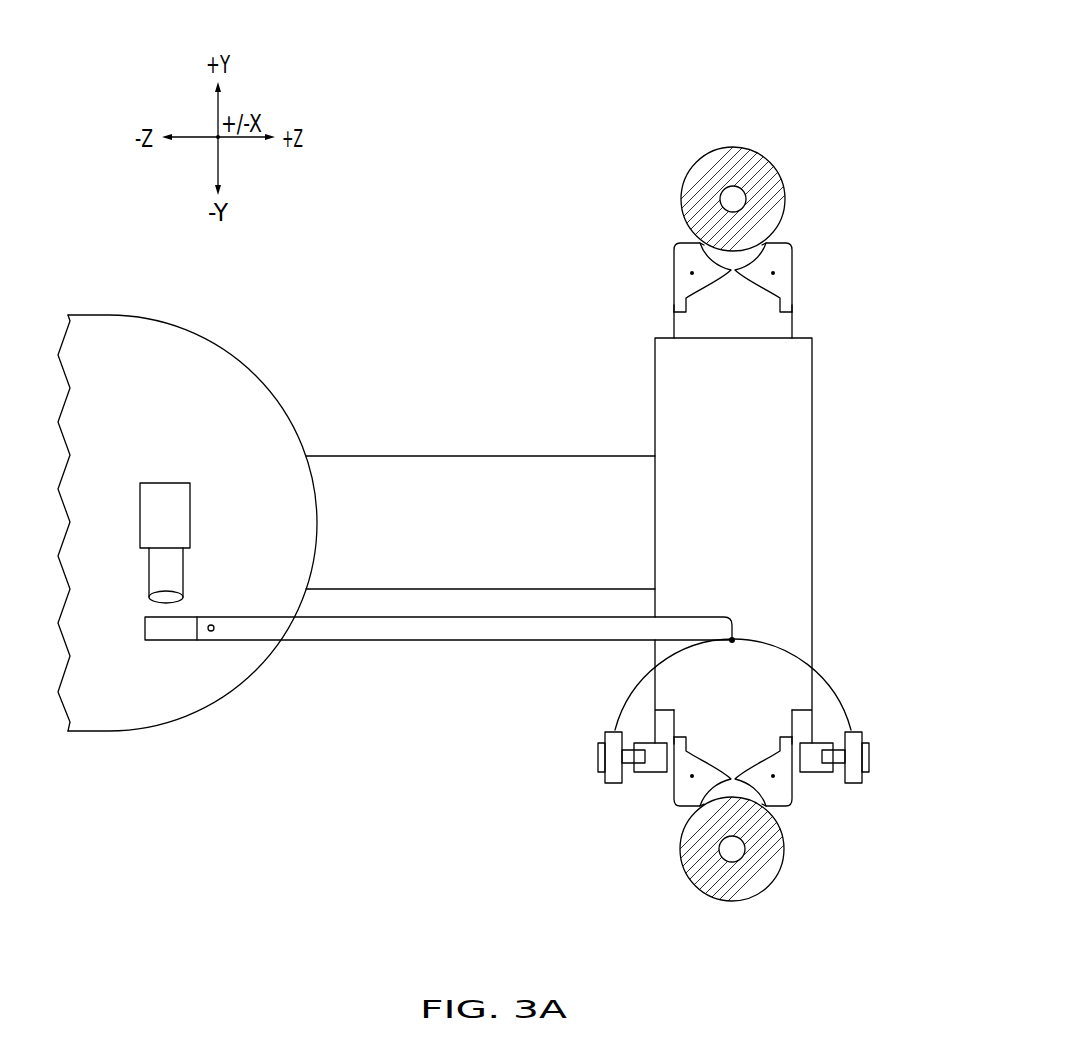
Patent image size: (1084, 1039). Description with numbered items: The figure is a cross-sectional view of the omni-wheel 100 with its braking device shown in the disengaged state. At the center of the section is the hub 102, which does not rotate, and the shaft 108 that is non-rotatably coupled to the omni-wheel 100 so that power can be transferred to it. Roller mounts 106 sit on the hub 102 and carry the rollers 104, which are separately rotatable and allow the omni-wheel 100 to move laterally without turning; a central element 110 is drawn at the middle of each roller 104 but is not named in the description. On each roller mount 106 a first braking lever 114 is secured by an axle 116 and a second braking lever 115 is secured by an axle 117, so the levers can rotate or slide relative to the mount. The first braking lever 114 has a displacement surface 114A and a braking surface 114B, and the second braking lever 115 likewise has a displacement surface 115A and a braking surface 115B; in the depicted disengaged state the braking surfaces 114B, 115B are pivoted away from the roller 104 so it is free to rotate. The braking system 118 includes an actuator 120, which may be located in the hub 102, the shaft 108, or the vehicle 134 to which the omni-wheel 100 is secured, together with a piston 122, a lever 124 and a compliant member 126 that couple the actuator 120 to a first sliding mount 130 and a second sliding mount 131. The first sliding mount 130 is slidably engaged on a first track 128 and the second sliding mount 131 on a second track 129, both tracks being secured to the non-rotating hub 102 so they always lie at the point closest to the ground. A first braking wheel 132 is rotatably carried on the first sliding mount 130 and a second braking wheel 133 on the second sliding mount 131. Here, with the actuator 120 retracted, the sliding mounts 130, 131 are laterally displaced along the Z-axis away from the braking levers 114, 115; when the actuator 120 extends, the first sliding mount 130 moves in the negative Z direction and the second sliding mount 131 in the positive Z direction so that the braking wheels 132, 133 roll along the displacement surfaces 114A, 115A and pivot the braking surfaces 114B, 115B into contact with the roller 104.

The omni-wheel 100 is at (860, 143).
The hub 102 is at (812, 496).
The roller 104 is at (770, 162).
The roller mount 106 is at (795, 318).
The shaft 108 is at (482, 456).
The axle 110 is at (733, 186).
The first braking lever 114 is at (793, 258).
The displacement surface 114A is at (793, 306).
The braking surface 114B is at (782, 242).
The second braking lever 115 is at (673, 258).
The displacement surface 115A is at (673, 306).
The braking surface 115B is at (684, 242).
The axle 116 is at (775, 274).
The axle 117 is at (690, 274).
The braking system 118 is at (551, 693).
The actuator 120 is at (190, 512).
The piston 122 is at (183, 568).
The lever 124 is at (372, 641).
The compliant member 126 is at (757, 641).
The first track 128 is at (869, 757).
The second track 129 is at (598, 758).
The first sliding mount 130 is at (862, 779).
The second sliding mount 131 is at (607, 736).
The first braking wheel 132 is at (848, 733).
The second braking wheel 133 is at (640, 752).
The vehicle 134 is at (132, 314).